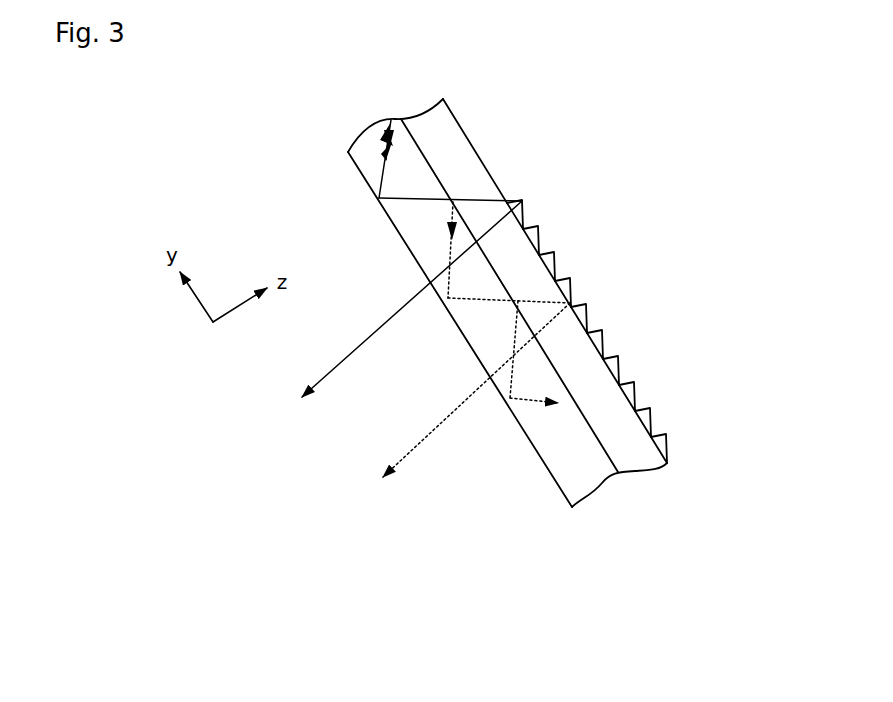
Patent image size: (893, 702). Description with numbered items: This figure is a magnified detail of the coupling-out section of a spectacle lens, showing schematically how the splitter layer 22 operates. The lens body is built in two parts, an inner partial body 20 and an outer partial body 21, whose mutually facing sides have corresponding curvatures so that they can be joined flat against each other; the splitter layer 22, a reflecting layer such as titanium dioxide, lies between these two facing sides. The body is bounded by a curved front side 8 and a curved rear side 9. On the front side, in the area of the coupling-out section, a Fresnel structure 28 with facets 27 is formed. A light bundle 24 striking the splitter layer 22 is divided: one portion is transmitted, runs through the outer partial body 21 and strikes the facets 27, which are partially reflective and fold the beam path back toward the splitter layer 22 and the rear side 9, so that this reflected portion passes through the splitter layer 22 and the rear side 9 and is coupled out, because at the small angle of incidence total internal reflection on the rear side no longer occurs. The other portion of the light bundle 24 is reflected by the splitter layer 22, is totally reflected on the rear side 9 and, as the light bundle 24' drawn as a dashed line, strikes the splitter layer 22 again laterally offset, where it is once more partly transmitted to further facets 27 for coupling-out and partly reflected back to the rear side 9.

The curved front side 8 is at (478, 152).
The curved rear side 9 is at (420, 263).
The inner partial body 20 is at (533, 428).
The outer partial body 21 is at (620, 450).
The splitter layer 22 is at (593, 427).
The light bundle 24 is at (391, 258).
The light bundle 24' is at (476, 339).
The facets 27 is at (525, 212).
The Fresnel structure 28 is at (614, 327).